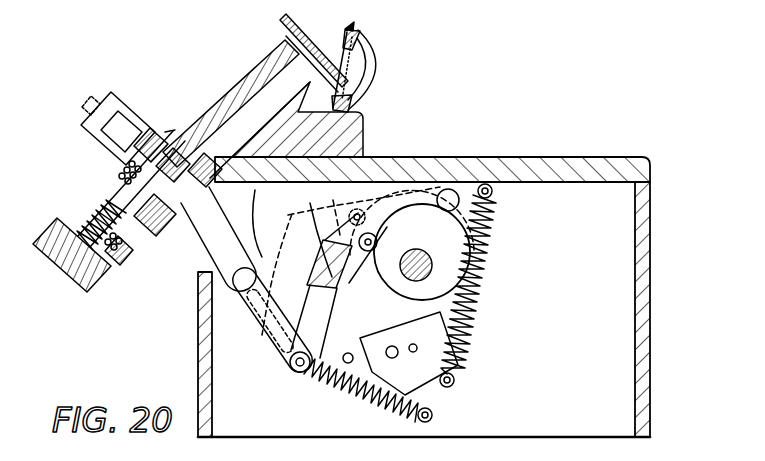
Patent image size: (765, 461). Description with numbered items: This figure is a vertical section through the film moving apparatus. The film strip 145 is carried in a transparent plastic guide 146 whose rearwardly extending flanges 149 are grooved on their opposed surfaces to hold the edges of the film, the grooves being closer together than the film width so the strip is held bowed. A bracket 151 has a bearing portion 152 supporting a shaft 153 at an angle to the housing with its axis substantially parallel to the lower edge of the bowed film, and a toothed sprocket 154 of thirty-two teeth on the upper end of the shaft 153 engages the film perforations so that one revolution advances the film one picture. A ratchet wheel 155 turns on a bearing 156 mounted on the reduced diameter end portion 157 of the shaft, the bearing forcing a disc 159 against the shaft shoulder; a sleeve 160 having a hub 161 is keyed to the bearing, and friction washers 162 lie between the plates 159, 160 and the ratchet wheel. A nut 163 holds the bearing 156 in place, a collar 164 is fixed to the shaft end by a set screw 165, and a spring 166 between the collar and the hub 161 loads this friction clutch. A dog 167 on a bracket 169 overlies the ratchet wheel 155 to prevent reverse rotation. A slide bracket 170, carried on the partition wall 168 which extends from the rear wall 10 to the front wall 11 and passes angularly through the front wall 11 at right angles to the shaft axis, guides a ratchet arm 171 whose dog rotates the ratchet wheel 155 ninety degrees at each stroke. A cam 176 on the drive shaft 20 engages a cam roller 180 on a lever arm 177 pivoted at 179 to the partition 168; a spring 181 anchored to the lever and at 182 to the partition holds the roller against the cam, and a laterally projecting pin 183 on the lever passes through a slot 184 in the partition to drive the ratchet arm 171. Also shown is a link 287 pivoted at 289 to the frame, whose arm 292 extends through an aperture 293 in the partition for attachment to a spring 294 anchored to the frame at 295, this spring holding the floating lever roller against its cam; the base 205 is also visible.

The rear wall 10 is at (652, 272).
The front wall 11 is at (200, 348).
The drive shaft 20 is at (424, 262).
The film strip 145 is at (363, 72).
The transparent plastic slide (guide) 146 is at (352, 27).
The flanges 149 is at (356, 40).
The bracket 151 is at (346, 138).
The bearing portion 152 is at (262, 70).
The shaft 153 is at (288, 68).
The toothed sprocket 154 is at (312, 52).
The ratchet wheel 155 is at (178, 228).
The bearing 156 is at (191, 161).
The reduced diameter end portion 157 is at (173, 143).
The disc 159 is at (165, 132).
The sleeve 160 is at (120, 172).
The hub 161 is at (115, 185).
The friction washers 162 is at (113, 155).
The nut 163 is at (110, 257).
The collar 164 is at (124, 268).
The set screw 165 is at (62, 258).
The spring 166 is at (82, 222).
The dog 167 is at (113, 150).
The partition wall 168 is at (622, 300).
The bracket 169 is at (113, 115).
The slide bracket 170 is at (215, 226).
The ratchet arm 171 is at (268, 333).
The cam 176 is at (470, 230).
The lever arm 177 is at (322, 232).
The pivot 179 is at (452, 195).
The cam roller 180 is at (370, 238).
The spring 181 is at (355, 392).
The spring anchor 182 is at (434, 416).
The laterally projecting pin 183 is at (296, 368).
The slot 184 is at (285, 345).
The base 205 is at (466, 460).
The link 287 is at (450, 393).
The pivot 289 is at (350, 352).
The arm 292 is at (468, 356).
The aperture 293 is at (470, 321).
The spring 294 is at (480, 258).
The spring anchor 295 is at (492, 193).